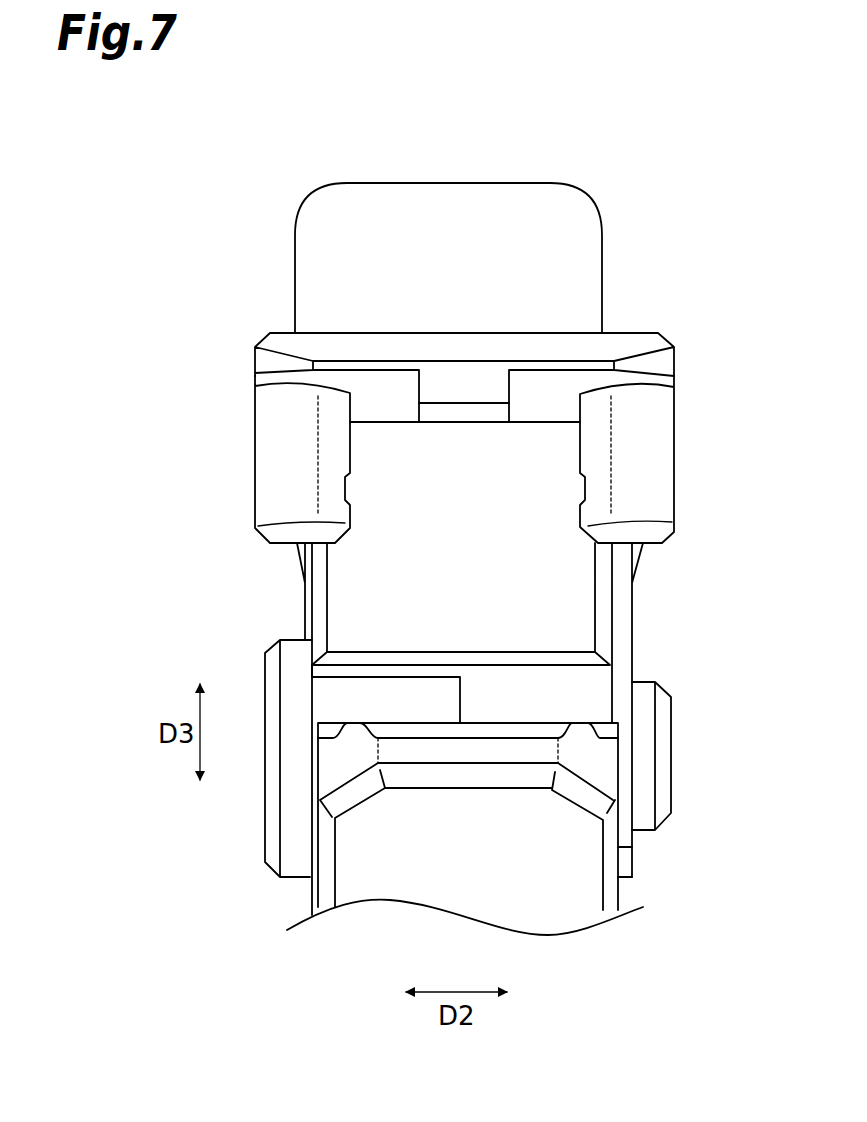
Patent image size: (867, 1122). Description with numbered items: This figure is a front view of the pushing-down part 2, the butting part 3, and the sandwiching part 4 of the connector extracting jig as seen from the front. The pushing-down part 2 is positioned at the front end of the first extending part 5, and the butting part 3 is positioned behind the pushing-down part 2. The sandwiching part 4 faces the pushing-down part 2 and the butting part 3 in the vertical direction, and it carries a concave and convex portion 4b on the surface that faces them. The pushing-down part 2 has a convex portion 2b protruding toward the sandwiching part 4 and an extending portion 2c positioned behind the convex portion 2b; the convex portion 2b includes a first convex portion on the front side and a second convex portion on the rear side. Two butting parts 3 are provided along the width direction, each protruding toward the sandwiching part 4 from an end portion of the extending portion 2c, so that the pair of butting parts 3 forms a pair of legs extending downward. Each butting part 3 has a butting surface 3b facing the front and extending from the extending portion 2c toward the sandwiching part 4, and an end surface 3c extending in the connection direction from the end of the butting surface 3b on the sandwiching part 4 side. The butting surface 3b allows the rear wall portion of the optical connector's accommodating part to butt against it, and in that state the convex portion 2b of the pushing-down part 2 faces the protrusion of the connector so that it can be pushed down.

The pushing-down part 2 is at (481, 393).
The convex portion 2b is at (473, 415).
The extending portion 2c is at (557, 368).
The butting part 3 is at (466, 645).
The butting surface 3b is at (272, 462).
The end surface 3c is at (283, 545).
The sandwiching part 4 is at (491, 787).
The concave and convex portion 4b is at (533, 723).
The first extending part 5 is at (455, 344).